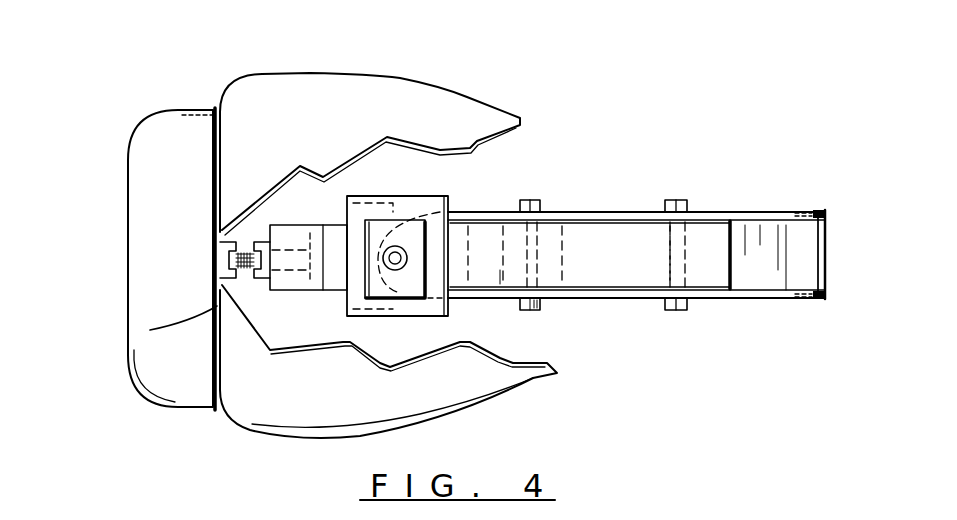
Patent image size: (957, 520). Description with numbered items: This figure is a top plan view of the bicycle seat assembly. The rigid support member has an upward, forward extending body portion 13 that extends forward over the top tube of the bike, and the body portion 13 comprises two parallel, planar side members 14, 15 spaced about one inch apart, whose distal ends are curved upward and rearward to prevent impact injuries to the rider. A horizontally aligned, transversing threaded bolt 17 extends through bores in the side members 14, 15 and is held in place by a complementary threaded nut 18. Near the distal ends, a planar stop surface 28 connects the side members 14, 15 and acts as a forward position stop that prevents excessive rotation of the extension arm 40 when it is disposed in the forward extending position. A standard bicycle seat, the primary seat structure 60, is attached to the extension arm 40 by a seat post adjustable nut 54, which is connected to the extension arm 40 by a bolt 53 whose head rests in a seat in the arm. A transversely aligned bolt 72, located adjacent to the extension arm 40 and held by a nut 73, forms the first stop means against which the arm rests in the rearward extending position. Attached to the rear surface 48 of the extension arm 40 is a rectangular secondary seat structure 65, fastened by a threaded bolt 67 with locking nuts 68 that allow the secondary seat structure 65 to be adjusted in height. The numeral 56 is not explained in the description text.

The body portion 13 is at (822, 218).
The side member 14 is at (788, 302).
The side member 15 is at (760, 211).
The threaded bolt 17 is at (688, 312).
The threaded nut 18 is at (688, 200).
The stop surface 28 is at (799, 235).
The extension arm 40 is at (623, 233).
The rear surface 48 is at (270, 231).
The bolt 53 is at (395, 258).
The adjustable nut 54 is at (422, 230).
The housing 56 is at (386, 197).
The primary seat structure 60 is at (300, 69).
The secondary seat structure 65 is at (128, 158).
The threaded bolt 67 is at (150, 330).
The locking nuts 68 is at (220, 254).
The bolt 72 is at (540, 310).
The nut 73 is at (537, 200).